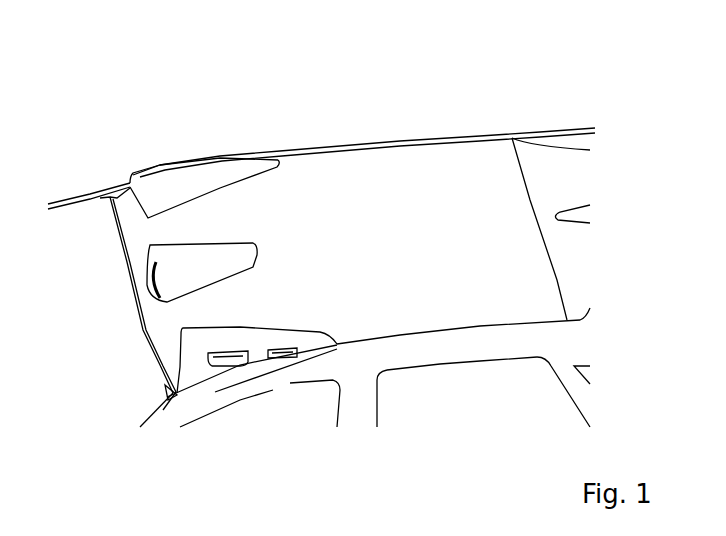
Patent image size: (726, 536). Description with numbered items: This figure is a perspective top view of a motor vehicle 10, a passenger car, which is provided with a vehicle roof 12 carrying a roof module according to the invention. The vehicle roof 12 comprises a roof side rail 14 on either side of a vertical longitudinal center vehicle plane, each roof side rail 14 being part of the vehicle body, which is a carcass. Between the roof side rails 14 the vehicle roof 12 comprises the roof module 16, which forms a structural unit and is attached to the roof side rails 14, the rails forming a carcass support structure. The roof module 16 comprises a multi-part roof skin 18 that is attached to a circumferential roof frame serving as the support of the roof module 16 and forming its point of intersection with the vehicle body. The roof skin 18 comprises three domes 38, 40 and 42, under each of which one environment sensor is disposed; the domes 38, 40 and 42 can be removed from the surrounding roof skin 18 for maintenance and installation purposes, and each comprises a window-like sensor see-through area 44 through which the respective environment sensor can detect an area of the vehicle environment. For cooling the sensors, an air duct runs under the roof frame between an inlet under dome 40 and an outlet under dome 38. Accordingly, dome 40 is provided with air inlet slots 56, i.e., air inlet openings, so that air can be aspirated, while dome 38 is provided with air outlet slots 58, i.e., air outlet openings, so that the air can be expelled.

The motor vehicle 10 is at (127, 105).
The vehicle roof 12 is at (482, 160).
The roof side rail 14 is at (393, 141).
The roof module 16 is at (315, 178).
The roof skin 18 is at (408, 291).
The dome 38 is at (160, 178).
The dome 40 is at (197, 347).
The dome 42 is at (162, 260).
The sensor see-through area 44 is at (147, 275).
The air inlet slots 56 is at (285, 352).
The air outlet slots 58 is at (228, 160).